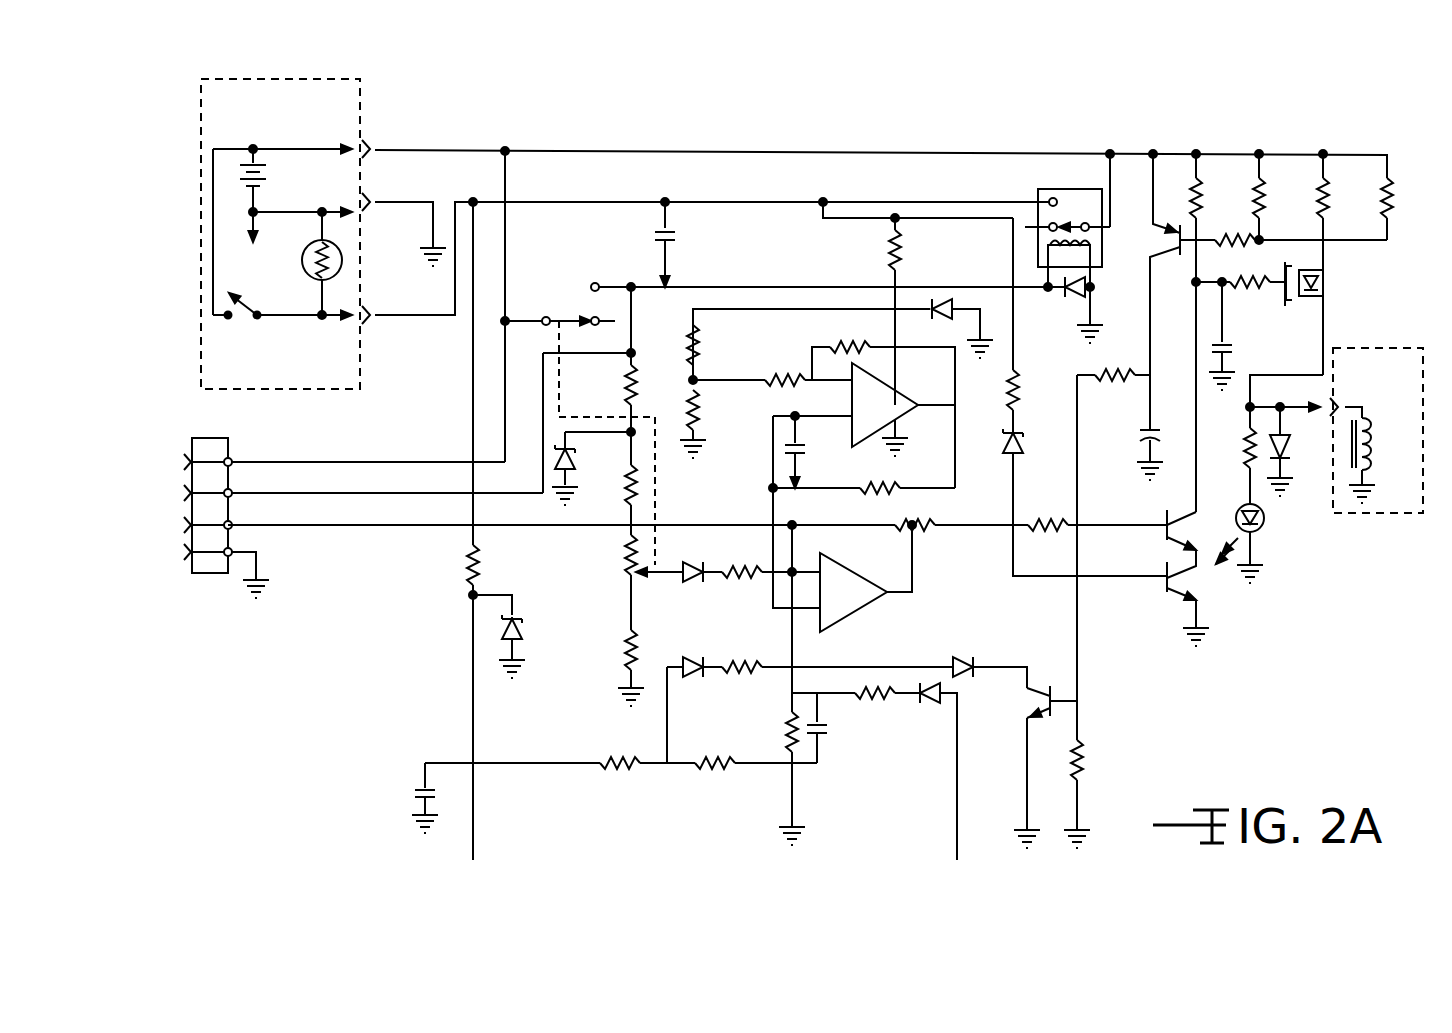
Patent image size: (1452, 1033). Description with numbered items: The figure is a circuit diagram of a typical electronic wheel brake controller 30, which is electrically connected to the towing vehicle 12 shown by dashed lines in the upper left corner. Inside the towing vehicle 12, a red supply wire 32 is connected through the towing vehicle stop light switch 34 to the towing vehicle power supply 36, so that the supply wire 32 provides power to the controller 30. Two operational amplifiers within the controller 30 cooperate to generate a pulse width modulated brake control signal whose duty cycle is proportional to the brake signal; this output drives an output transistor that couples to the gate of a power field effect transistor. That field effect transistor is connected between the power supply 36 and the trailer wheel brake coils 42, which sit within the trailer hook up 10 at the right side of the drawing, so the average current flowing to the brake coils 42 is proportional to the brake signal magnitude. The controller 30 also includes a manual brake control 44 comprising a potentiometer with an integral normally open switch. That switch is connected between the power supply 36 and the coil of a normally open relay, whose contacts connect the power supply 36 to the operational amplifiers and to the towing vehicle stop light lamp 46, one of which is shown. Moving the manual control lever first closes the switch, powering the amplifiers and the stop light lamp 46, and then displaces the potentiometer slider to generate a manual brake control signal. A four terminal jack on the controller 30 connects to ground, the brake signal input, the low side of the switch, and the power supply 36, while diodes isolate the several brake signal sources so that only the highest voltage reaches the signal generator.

The trailer hook up 10 is at (1367, 431).
The towing vehicle 12 is at (295, 214).
The electronic wheel brake controller 30 is at (909, 119).
The red supply wire 32 is at (598, 202).
The towing vehicle stop light switch 34 is at (212, 333).
The towing vehicle power supply 36 is at (235, 172).
The trailer wheel brake coils 42 is at (1349, 502).
The manual brake control 44 is at (605, 637).
The towing vehicle stop light lamp 46 is at (345, 261).